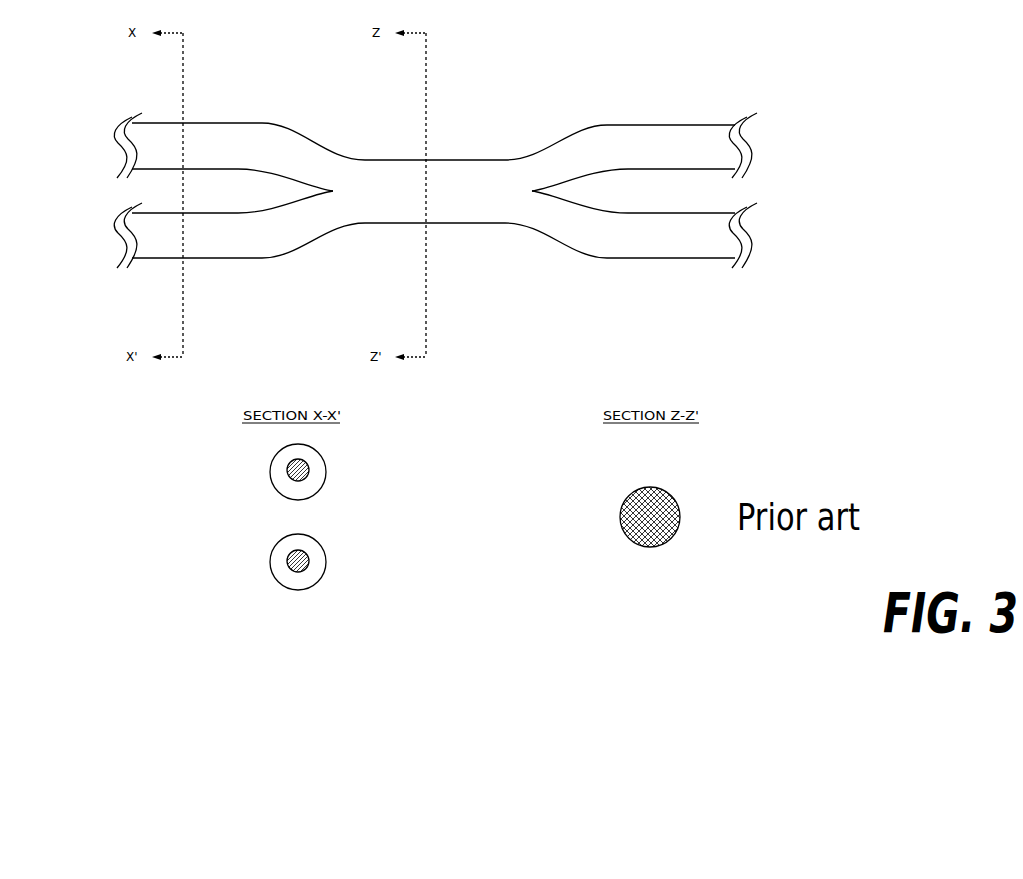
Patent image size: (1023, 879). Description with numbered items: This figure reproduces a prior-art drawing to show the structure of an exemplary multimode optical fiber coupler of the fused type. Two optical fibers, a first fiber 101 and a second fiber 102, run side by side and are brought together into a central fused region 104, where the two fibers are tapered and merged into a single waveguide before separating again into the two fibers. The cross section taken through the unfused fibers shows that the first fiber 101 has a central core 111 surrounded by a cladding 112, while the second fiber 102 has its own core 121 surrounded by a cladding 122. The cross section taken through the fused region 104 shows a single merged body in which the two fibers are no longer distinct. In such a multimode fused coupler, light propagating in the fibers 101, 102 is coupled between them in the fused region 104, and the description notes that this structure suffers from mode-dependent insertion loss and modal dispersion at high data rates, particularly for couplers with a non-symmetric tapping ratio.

The first optical fiber 101 is at (243, 122).
The second optical fiber 102 is at (243, 258).
The fused tapered region 104 is at (371, 139).
The core of first optical fiber 111 is at (287, 468).
The cladding of first optical fiber 112 is at (272, 478).
The core of second optical fiber 121 is at (287, 558).
The cladding of second optical fiber 122 is at (272, 575).